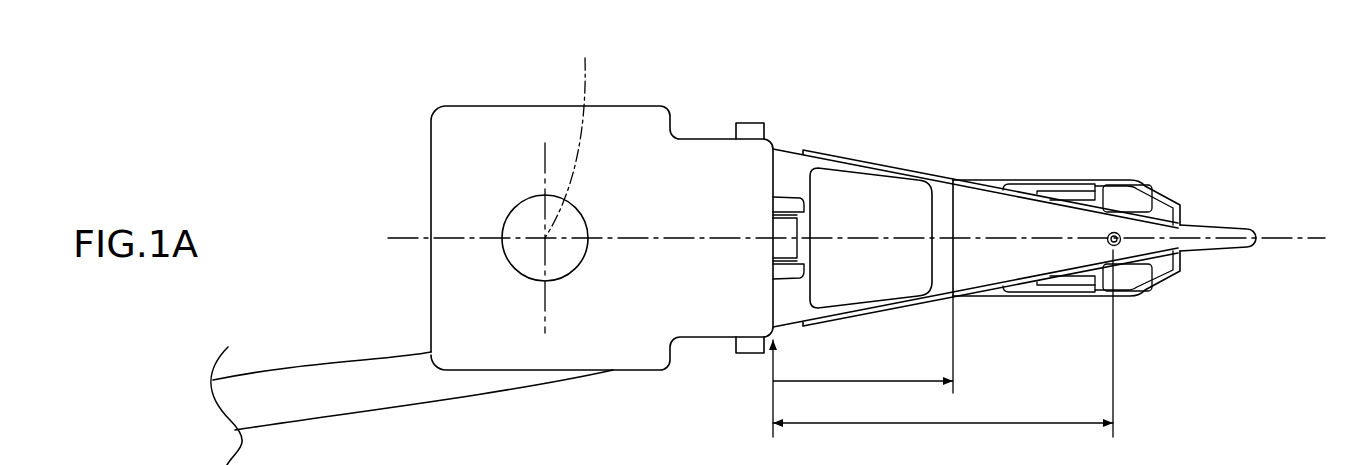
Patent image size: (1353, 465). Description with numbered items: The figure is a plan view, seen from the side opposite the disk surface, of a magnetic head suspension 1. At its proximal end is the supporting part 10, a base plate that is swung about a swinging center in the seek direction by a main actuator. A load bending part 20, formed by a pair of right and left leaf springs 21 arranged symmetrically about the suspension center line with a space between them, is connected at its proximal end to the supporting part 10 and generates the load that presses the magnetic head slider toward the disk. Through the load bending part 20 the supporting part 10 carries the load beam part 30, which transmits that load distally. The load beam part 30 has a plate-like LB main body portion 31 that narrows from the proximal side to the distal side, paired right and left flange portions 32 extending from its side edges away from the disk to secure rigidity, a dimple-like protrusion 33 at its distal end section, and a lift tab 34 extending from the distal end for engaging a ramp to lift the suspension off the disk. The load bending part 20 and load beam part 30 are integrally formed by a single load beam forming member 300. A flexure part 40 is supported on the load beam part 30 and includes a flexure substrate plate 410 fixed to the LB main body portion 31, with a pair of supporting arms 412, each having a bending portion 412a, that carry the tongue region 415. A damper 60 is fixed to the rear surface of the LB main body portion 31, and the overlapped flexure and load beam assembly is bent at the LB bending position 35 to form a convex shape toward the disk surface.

The magnetic head suspension 1 is at (1038, 92).
The supporting part 10 is at (480, 135).
The load bending part 20 is at (783, 209).
The leaf springs 21 is at (792, 163).
The load beam part 30 is at (975, 214).
The LB main body portion 31 is at (943, 205).
The flange portions 32 is at (866, 160).
The protrusion 33 is at (1117, 232).
The lift tab 34 is at (1243, 228).
The LB bending position 35 is at (955, 216).
The flexure part 40 is at (1066, 248).
The damper 60 is at (880, 277).
The load beam forming member 300 is at (965, 268).
The flexure substrate plate 410 is at (1043, 300).
The supporting arms 412 is at (1067, 190).
The bending portion 412a is at (1013, 184).
The tongue region 415 is at (1149, 268).